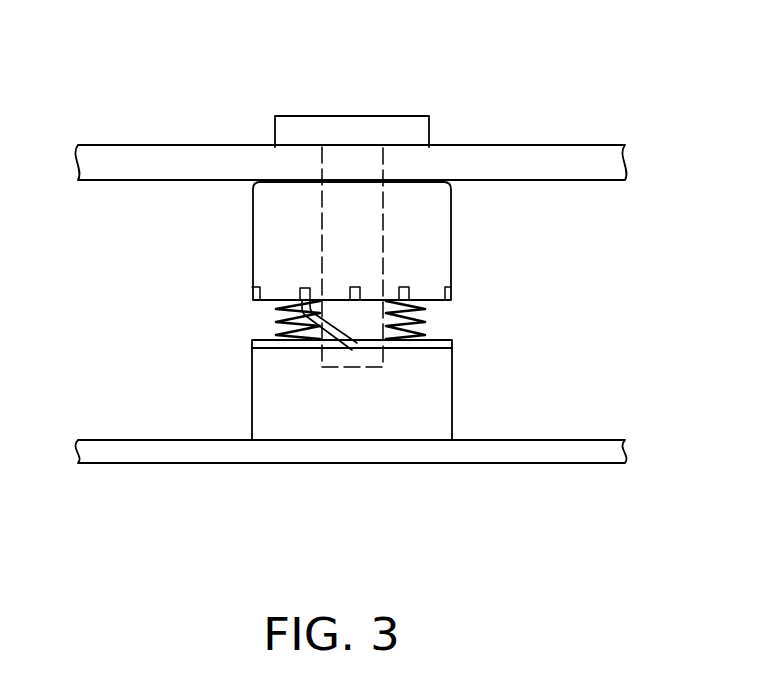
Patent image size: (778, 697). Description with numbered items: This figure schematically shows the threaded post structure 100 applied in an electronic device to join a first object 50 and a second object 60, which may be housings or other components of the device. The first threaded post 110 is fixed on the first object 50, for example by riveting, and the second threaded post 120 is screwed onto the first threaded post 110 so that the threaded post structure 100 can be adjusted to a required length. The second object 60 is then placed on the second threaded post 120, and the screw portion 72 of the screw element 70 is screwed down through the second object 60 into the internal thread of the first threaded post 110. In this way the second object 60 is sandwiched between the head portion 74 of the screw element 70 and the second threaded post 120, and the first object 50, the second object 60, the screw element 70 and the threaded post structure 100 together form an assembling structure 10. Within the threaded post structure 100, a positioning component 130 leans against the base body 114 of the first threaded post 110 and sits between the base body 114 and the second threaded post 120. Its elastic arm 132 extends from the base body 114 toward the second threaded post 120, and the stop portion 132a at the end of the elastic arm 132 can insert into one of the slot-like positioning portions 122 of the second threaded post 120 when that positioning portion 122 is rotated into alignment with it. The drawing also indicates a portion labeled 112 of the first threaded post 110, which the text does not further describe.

The assembling structure 10 is at (681, 561).
The first object 50 is at (570, 452).
The second object 60 is at (582, 160).
The screw element 70 is at (376, 183).
The screw portion 72 is at (383, 237).
The head portion 74 is at (354, 125).
The threaded post structure 100 is at (151, 296).
The first threaded post 110 is at (408, 439).
The base top portion 112 is at (422, 313).
The base body 114 is at (433, 396).
The second threaded post 120 is at (443, 246).
The positioning portion 122 is at (310, 276).
The positioning component 130 is at (262, 343).
The elastic arm 132 is at (338, 338).
The stop portion 132a is at (252, 297).